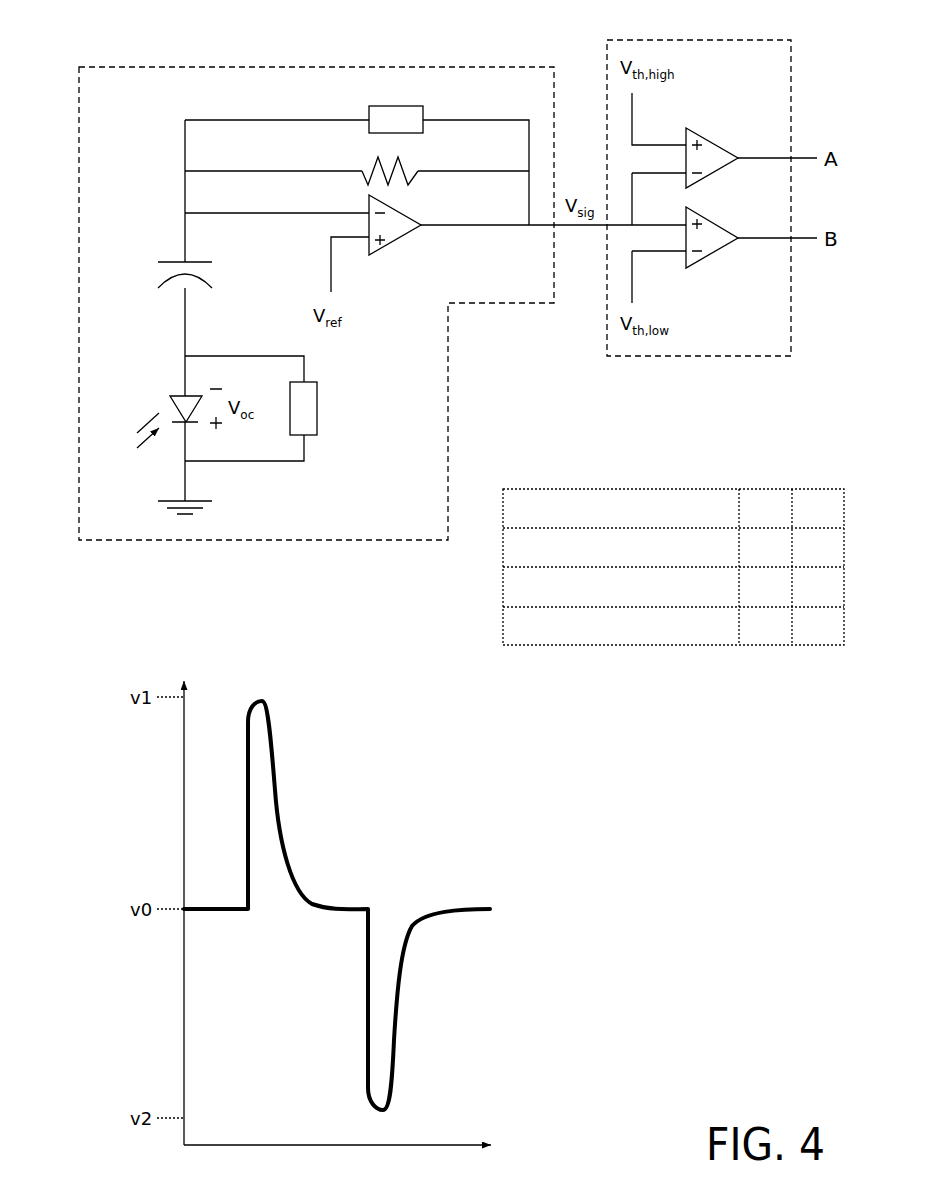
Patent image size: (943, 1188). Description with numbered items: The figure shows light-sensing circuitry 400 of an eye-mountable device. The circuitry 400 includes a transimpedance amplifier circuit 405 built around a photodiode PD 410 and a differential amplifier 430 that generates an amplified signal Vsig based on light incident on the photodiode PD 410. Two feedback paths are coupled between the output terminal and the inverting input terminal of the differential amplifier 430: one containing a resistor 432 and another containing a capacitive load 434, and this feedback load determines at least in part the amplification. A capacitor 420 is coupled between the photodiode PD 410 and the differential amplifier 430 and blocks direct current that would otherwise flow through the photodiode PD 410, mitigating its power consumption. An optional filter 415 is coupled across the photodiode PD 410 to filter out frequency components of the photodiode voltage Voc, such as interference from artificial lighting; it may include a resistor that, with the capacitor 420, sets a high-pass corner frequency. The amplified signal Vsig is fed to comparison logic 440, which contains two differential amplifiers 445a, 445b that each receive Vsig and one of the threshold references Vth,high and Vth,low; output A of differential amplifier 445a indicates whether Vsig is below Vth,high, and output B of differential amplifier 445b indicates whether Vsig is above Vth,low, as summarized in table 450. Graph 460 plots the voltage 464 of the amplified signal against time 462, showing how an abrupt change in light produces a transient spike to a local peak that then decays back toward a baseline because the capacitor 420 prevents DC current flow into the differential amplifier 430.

The circuitry 400 is at (108, 57).
The transimpedance amplifier circuit 405 is at (436, 536).
The photodiode PD 410 is at (156, 408).
The filter 415 is at (353, 408).
The capacitor 420 is at (151, 277).
The differential amplifier 430 is at (404, 250).
The resistor 432 is at (355, 157).
The capacitive load 434 is at (432, 140).
The comparison logic 440 is at (777, 352).
The differential amplifier 445a is at (721, 134).
The differential amplifier 445b is at (721, 261).
The table 450 is at (673, 557).
The graph 460 is at (400, 724).
The time 462 is at (392, 1146).
The voltage 464 is at (184, 884).